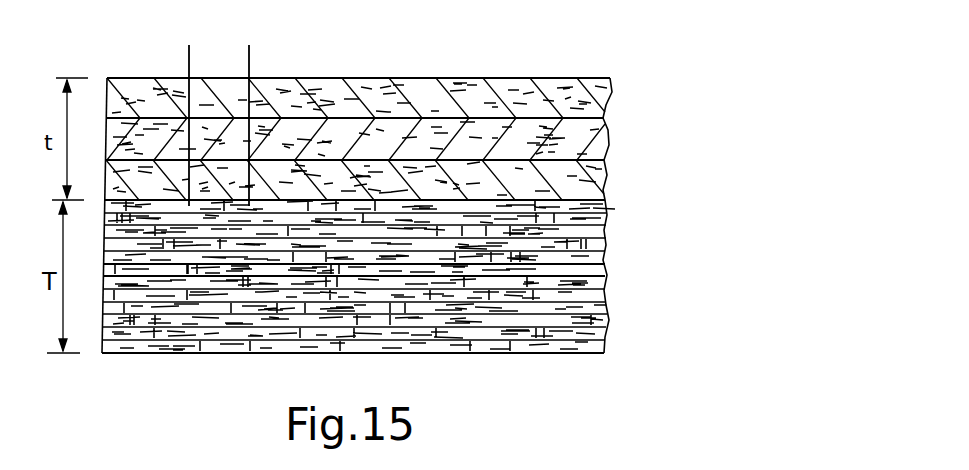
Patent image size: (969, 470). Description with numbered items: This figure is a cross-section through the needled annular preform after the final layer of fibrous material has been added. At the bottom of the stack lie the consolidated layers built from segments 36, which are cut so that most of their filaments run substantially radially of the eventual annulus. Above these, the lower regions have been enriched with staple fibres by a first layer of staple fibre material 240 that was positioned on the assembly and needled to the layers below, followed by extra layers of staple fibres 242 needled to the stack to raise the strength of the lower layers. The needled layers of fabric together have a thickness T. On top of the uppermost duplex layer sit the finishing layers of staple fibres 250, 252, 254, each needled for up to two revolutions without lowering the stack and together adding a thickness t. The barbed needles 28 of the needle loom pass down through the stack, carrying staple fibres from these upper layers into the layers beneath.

The finishing layer of staple fibres 254 is at (546, 86).
The second layer of staple fibres 252 is at (605, 141).
The first layer of staple fibres 250 is at (605, 184).
The extra layers of staple fibres 242 is at (606, 257).
The first layer of staple fibre material 240 is at (606, 273).
The segments 36 is at (608, 306).
The barbed needles 28 is at (250, 58).